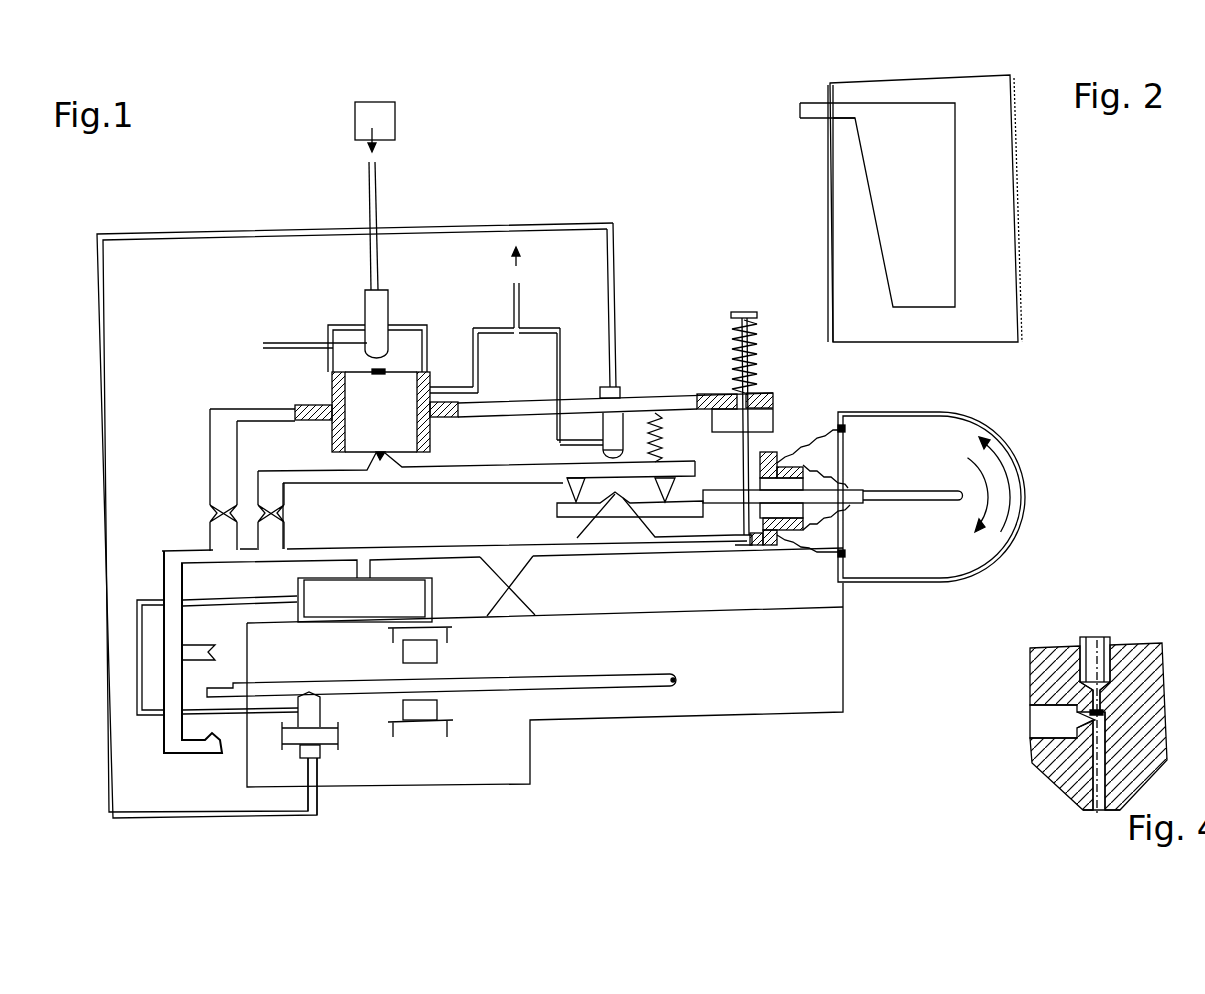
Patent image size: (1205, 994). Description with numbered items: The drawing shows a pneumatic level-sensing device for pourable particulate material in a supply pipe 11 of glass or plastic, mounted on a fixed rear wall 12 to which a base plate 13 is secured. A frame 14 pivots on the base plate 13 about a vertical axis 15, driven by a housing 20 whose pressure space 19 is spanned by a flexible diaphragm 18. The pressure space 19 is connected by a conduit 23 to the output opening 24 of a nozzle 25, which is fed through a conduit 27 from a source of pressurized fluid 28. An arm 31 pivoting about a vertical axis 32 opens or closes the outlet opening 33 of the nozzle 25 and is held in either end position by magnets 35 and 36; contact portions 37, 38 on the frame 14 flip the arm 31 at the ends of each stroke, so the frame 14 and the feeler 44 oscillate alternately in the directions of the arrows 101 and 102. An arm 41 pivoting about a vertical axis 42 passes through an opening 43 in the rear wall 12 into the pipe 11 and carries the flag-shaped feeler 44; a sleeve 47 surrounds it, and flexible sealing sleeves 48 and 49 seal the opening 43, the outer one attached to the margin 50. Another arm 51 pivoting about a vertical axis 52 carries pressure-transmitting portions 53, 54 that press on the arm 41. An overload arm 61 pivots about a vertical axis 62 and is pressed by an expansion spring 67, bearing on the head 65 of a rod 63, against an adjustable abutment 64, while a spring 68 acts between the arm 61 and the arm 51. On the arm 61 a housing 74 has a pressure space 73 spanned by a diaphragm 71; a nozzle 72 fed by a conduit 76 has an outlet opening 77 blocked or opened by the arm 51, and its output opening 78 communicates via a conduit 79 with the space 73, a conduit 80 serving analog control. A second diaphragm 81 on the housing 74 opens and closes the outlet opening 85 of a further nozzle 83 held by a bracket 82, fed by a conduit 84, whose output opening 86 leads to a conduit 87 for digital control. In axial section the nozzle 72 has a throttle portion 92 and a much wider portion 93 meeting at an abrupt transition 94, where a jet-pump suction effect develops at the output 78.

In FIG. 1, the supply pipe 11 is at (1025, 502).
In FIG. 2, the supply pipe 11 is at (1012, 148).
In FIG. 1, the rear wall 12 is at (843, 412).
In FIG. 2, the rear wall 12 is at (828, 205).
In FIG. 1, the base plate 13 is at (830, 673).
In FIG. 1, the frame 14 is at (403, 550).
In FIG. 1, the vertical axis 15 is at (508, 588).
In FIG. 1, the flexible diaphragm 18 is at (330, 582).
In FIG. 1, the pressure space 19 is at (410, 597).
In FIG. 1, the housing 20 is at (430, 584).
In FIG. 1, the conduit 23 is at (140, 600).
In FIG. 1, the output opening 24 is at (298, 712).
In FIG. 1, the nozzle 25 is at (317, 710).
In FIG. 1, the conduit 27 is at (103, 415).
In FIG. 1, the source of pressurized fluid 28 is at (355, 140).
In FIG. 1, the arm 31 is at (553, 678).
In FIG. 1, the vertical axis 32 is at (672, 672).
In FIG. 1, the outlet opening 33 is at (312, 695).
In FIG. 1, the magnet 35 is at (437, 650).
In FIG. 1, the magnet 36 is at (423, 710).
In FIG. 1, the contact portion 37 is at (208, 653).
In FIG. 1, the contact portion 38 is at (203, 740).
In FIG. 1, the arm 41 is at (853, 487).
In FIG. 2, the arm 41 is at (835, 112).
In FIG. 1, the vertical axis 42 is at (615, 495).
In FIG. 1, the opening 43 is at (845, 462).
In FIG. 1, the feeler 44 is at (955, 493).
In FIG. 2, the feeler 44 is at (922, 247).
In FIG. 1, the sleeve 47 is at (765, 548).
In FIG. 1, the sealing sleeve 48 is at (823, 540).
In FIG. 1, the sealing sleeve 49 is at (805, 543).
In FIG. 1, the margin 50 is at (845, 560).
In FIG. 1, the arm 51 is at (393, 478).
In FIG. 1, the vertical axis 52 is at (280, 515).
In FIG. 1, the pressure-transmitting portion 53 is at (577, 487).
In FIG. 1, the pressure-transmitting portion 54 is at (668, 488).
In FIG. 1, the overload arm 61 is at (632, 400).
In FIG. 1, the vertical axis 62 is at (217, 518).
In FIG. 1, the rod 63 is at (748, 452).
In FIG. 1, the adjustable abutment 64 is at (773, 430).
In FIG. 1, the head 65 is at (743, 313).
In FIG. 1, the expansion spring 67 is at (735, 353).
In FIG. 1, the spring 68 is at (658, 422).
In FIG. 1, the flexible diaphragm 71 is at (403, 455).
In FIG. 1, the nozzle 72 is at (612, 433).
In FIG. 4, the nozzle 72 is at (1068, 790).
In FIG. 1, the pressure space 73 is at (395, 417).
In FIG. 1, the housing 74 is at (333, 435).
In FIG. 1, the conduit 76 is at (614, 355).
In FIG. 4, the conduit 76 is at (1087, 668).
In FIG. 1, the outlet opening 77 is at (612, 452).
In FIG. 4, the outlet opening 77 is at (1100, 815).
In FIG. 1, the output opening 78 is at (607, 445).
In FIG. 4, the output opening 78 is at (1090, 720).
In FIG. 1, the conduit 79 is at (560, 328).
In FIG. 1, the conduit 80 is at (522, 262).
In FIG. 1, the second diaphragm 81 is at (357, 372).
In FIG. 1, the bracket 82 is at (423, 323).
In FIG. 1, the nozzle 83 is at (380, 307).
In FIG. 1, the conduit 84 is at (376, 246).
In FIG. 1, the outlet opening 85 is at (390, 357).
In FIG. 1, the output opening 86 is at (365, 340).
In FIG. 1, the conduit 87 is at (283, 345).
In FIG. 4, the throttle portion 92 is at (1095, 693).
In FIG. 4, the passage portion 93 is at (1095, 752).
In FIG. 4, the transition 94 is at (1092, 713).
In FIG. 1, the arrow 101 is at (988, 488).
In FIG. 1, the arrow 102 is at (1007, 500).